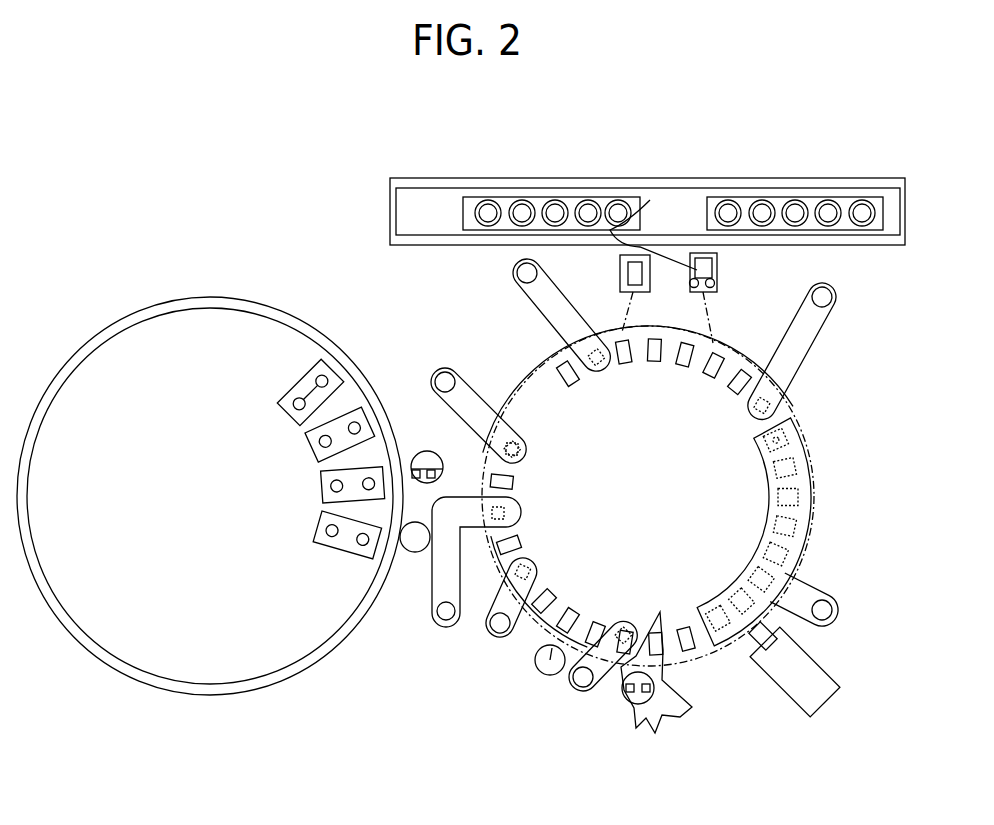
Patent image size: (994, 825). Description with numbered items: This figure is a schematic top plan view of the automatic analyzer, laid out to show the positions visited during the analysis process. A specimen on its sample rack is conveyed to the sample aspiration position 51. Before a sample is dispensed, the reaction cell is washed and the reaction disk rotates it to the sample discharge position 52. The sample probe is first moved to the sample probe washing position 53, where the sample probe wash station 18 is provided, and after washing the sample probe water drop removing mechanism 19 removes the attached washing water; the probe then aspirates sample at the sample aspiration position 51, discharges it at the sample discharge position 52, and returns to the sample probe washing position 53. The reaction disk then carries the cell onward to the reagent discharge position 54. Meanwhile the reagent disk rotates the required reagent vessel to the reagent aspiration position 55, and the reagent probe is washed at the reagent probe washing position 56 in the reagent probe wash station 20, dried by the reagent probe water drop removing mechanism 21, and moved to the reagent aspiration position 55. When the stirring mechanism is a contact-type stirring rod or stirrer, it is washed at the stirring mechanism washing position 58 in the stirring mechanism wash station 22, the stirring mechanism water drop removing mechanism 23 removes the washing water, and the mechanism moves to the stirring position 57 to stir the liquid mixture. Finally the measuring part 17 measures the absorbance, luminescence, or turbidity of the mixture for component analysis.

The measuring part 17 is at (827, 703).
The sample probe wash station 18 is at (717, 268).
The sample probe water drop removing mechanism 19 is at (718, 292).
The reagent probe wash station 20 is at (445, 466).
The reagent probe water drop removing mechanism 21 is at (440, 473).
The stirring mechanism wash station 22 is at (685, 705).
The stirring mechanism water drop removing mechanism 23 is at (638, 688).
The sample aspiration position 51 is at (728, 212).
The sample discharge position 52 is at (763, 403).
The sample probe washing position 53 is at (617, 215).
The reagent discharge position 54 is at (547, 397).
The reagent aspiration position 55 is at (295, 407).
The reagent probe washing position 56 is at (428, 468).
The stirring position 57 is at (617, 655).
The stirring mechanism washing position 58 is at (640, 716).